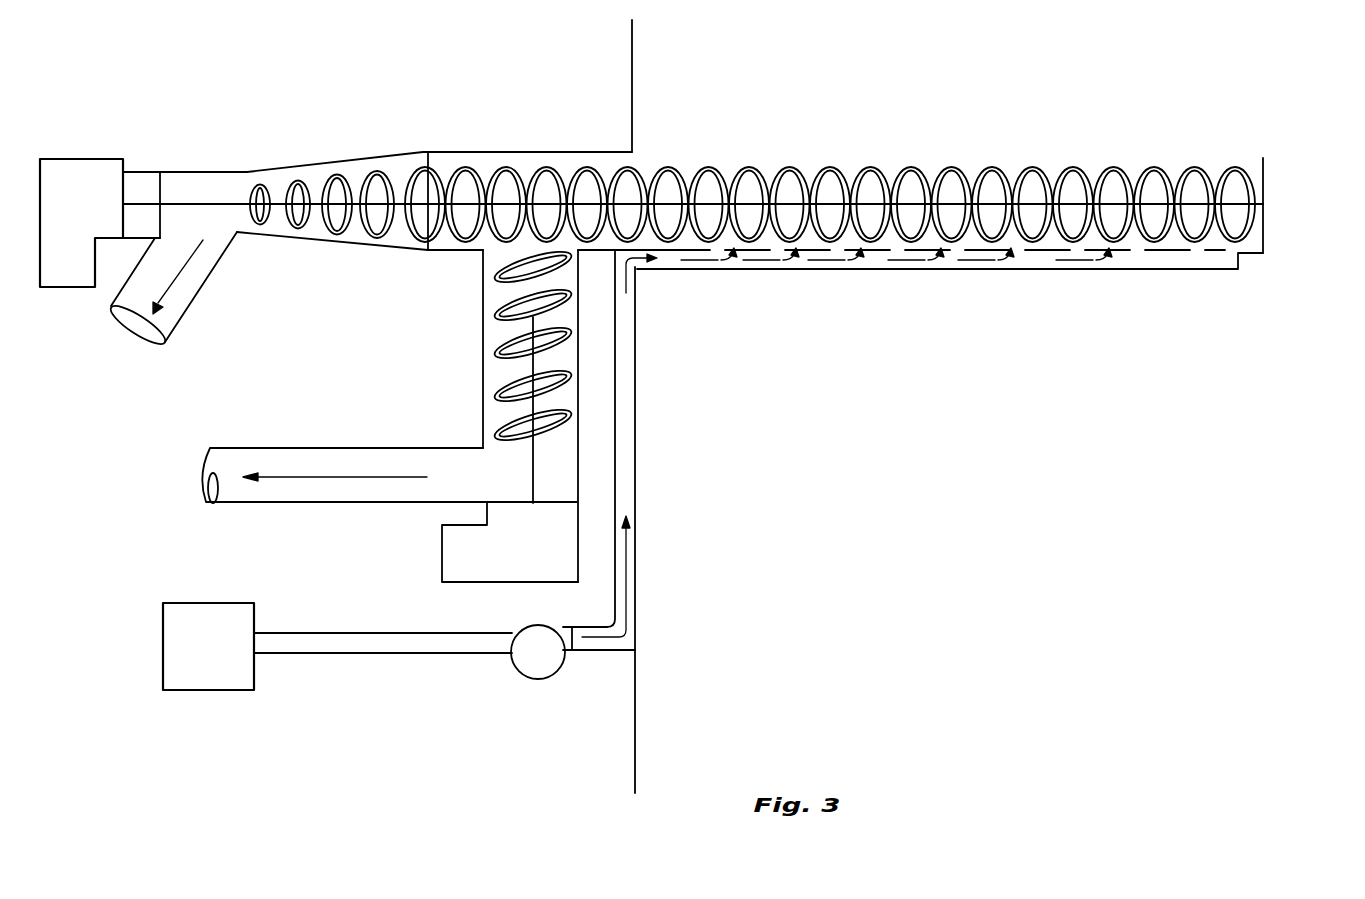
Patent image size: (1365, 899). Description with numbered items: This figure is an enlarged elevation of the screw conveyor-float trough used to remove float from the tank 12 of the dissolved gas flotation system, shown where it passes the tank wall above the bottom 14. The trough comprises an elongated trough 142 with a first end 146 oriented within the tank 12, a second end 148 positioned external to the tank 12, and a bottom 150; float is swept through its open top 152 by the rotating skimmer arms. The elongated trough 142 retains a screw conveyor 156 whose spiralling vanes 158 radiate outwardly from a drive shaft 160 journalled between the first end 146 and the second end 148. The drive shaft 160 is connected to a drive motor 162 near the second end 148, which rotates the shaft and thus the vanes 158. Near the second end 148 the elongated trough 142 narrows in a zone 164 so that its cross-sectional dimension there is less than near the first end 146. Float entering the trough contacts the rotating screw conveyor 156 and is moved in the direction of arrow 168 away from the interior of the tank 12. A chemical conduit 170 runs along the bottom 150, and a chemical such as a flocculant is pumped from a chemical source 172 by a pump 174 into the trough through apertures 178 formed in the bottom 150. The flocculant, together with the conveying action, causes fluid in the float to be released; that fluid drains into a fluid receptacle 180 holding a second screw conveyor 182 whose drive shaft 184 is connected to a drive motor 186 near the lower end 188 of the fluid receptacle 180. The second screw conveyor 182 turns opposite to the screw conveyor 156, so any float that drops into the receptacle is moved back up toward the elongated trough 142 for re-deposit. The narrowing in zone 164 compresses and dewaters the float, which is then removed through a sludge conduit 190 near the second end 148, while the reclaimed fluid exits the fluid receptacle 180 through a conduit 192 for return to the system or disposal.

The tank 12 is at (815, 82).
The bottom 14 is at (630, 82).
The elongated trough 142 is at (1263, 187).
The first end 146 is at (1265, 240).
The second end 148 is at (160, 170).
The bottom 150 is at (662, 258).
The open top 152 is at (1152, 128).
The screw conveyor 156 is at (705, 165).
The spiralling vanes 158 is at (493, 168).
The drive shaft 160 is at (206, 200).
The drive motor 162 is at (70, 165).
The zone 164 is at (427, 255).
The arrow 168 is at (800, 150).
The chemical conduit 170 is at (885, 262).
The chemical source 172 is at (208, 675).
The pump 174 is at (517, 670).
The apertures 178 is at (740, 265).
The fluid receptacle 180 is at (482, 290).
The second screw conveyor 182 is at (483, 348).
The drive shaft 184 is at (530, 482).
The drive motor 186 is at (452, 570).
The lower end 188 is at (507, 500).
The sludge conduit 190 is at (176, 313).
The conduit 192 is at (232, 457).